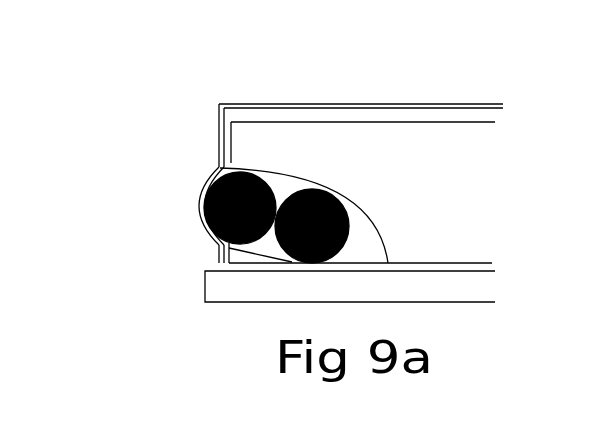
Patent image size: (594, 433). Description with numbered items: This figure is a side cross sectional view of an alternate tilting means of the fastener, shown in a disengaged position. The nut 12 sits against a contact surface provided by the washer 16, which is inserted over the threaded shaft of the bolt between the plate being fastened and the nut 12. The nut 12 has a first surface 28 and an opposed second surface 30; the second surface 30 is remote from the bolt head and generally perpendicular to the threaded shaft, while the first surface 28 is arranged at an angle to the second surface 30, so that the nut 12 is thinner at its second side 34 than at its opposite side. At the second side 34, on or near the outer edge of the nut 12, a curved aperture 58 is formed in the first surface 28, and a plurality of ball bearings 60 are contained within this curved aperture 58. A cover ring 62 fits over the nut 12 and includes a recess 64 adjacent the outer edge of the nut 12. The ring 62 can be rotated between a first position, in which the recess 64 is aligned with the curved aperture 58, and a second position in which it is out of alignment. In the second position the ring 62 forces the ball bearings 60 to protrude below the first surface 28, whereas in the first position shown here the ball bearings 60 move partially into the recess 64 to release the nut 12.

The nut 12 is at (455, 193).
The washer 16 is at (217, 296).
The first surface 28 is at (473, 264).
The second surface 30 is at (393, 127).
The second side 34 is at (212, 107).
The curved aperture 58 is at (285, 187).
The ball bearings 60 is at (245, 170).
The cover ring 62 is at (490, 103).
The recess 64 is at (197, 208).